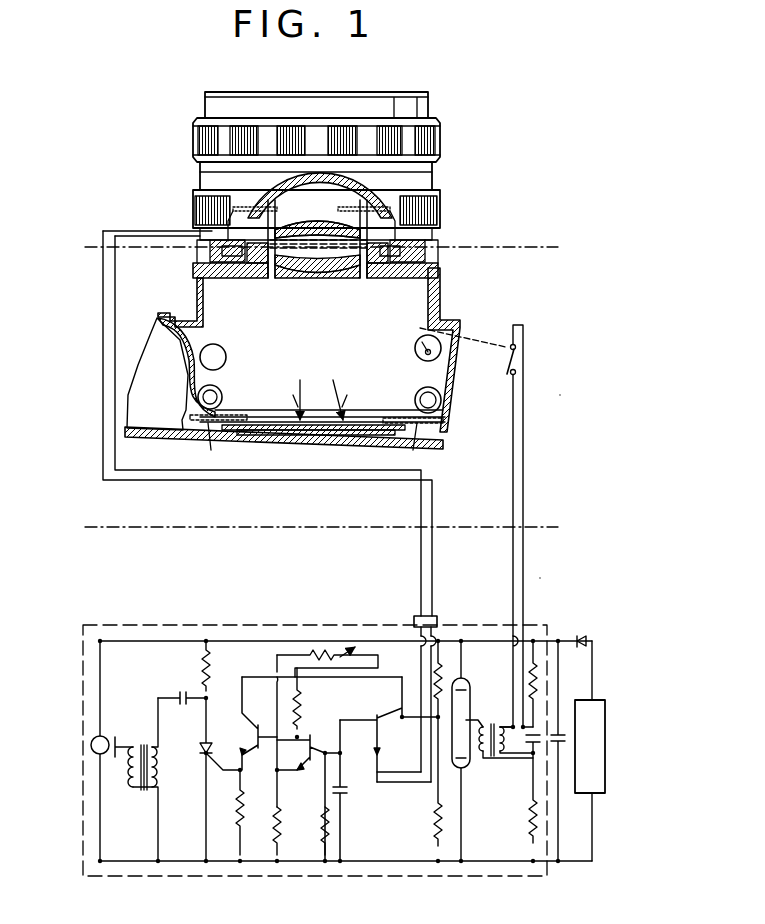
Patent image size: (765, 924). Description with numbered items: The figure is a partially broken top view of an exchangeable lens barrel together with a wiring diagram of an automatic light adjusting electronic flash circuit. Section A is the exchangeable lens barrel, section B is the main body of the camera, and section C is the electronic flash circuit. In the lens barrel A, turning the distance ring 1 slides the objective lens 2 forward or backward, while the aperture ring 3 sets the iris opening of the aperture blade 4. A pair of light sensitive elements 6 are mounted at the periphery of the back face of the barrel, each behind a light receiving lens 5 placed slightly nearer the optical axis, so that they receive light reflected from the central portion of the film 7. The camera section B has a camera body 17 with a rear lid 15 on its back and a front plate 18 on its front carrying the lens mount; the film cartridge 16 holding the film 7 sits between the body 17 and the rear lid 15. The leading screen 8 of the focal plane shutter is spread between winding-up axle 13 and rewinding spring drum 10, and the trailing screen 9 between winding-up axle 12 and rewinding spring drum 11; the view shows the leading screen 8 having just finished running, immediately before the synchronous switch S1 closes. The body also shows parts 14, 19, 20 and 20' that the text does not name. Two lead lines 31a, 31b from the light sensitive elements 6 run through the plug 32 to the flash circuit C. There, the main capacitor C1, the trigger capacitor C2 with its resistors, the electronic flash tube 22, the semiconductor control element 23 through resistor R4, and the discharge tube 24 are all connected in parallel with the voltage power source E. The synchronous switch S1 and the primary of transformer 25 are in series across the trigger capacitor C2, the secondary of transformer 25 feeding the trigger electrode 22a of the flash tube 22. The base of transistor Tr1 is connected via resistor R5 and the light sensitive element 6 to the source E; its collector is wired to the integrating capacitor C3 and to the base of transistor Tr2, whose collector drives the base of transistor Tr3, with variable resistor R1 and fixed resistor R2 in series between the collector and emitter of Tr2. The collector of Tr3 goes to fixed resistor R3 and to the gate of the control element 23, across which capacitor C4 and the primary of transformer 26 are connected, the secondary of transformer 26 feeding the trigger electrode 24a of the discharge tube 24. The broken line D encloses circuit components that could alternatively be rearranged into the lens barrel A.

The distance ring 1 is at (440, 146).
The objective lens 2 is at (320, 278).
The aperture ring 3 is at (440, 212).
The aperture blade 4 is at (290, 201).
The light receiving lens 5 is at (250, 274).
The light sensitive element 6 is at (210, 260).
The film 7 is at (358, 414).
The leading screen 8 is at (265, 414).
The trailing screen 9 is at (325, 412).
The rewinding spring drum 10 is at (222, 397).
The rewinding spring drum 11 is at (226, 357).
The winding-up axle 12 is at (441, 400).
The winding-up axle 13 is at (418, 343).
The film backing plate 14 is at (374, 418).
The rear lid 15 is at (315, 442).
The film cartridge 16 is at (145, 355).
The camera body 17 is at (173, 317).
The front plate 18 is at (450, 298).
The lens mount base 19 is at (430, 258).
The housing support 20 is at (407, 448).
The housing support 20' is at (203, 448).
The electronic flash tube 22 is at (464, 770).
The trigger electrode 22a is at (474, 717).
The semiconductor control element 23 is at (200, 758).
The discharge tube 24 is at (90, 745).
The trigger electrode 24a is at (120, 740).
The transformer 25 is at (489, 759).
The transformer 26 is at (139, 787).
The lead line 31a is at (431, 573).
The lead line 31b is at (421, 575).
The plug 32 is at (437, 616).
The exchangeable lens barrel A is at (493, 189).
The main body of camera B is at (548, 393).
The electronic flash circuit C is at (533, 576).
The broken line D is at (226, 625).
The voltage power source E is at (590, 748).
The variable resistor R1 is at (316, 650).
The fixed resistor R2 is at (298, 700).
The fixed resistor R3 is at (239, 799).
The resistor R4 is at (212, 668).
The resistor R5 is at (432, 816).
The main capacitor C1 is at (560, 730).
The trigger capacitor C2 is at (530, 748).
The integrating capacitor C3 is at (343, 797).
The capacitor C4 is at (180, 691).
The transistor Tr1 is at (377, 720).
The transistor Tr2 is at (316, 747).
The transistor Tr3 is at (254, 741).
The synchronous switch S1 is at (506, 361).